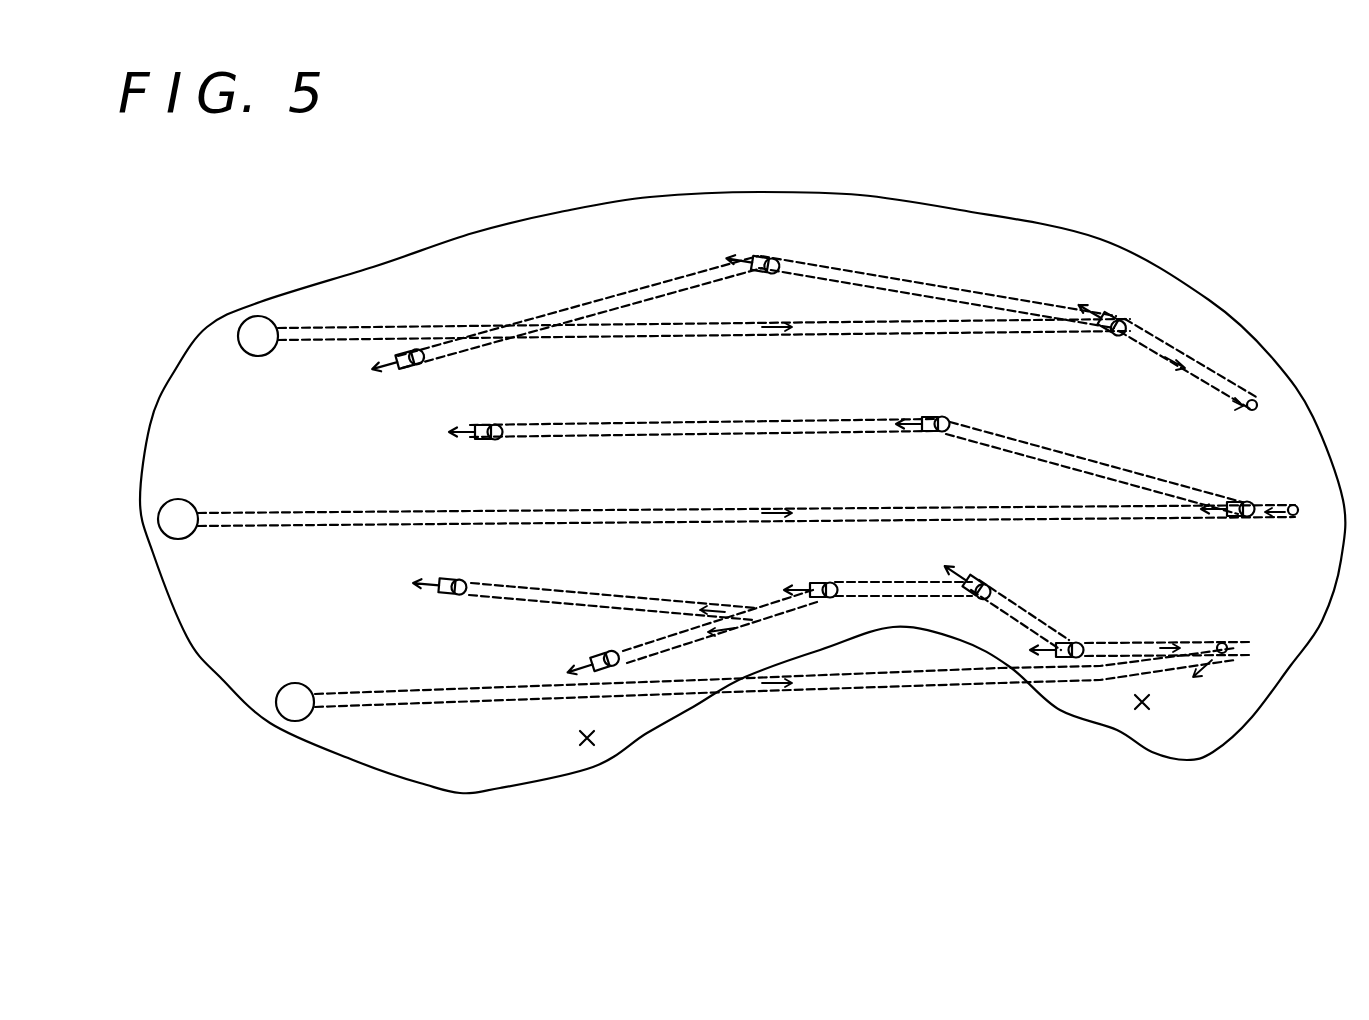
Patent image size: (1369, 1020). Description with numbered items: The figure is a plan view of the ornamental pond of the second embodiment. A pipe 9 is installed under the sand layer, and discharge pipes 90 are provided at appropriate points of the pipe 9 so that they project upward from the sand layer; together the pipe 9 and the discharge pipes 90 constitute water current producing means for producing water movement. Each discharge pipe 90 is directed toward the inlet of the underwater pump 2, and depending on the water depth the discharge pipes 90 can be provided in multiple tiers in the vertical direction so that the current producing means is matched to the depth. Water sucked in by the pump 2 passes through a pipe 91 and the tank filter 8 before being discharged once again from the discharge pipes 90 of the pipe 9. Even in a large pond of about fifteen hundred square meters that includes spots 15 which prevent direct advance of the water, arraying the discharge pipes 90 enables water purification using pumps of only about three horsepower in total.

The underwater pump 2 is at (205, 498).
The tank filter 8 is at (258, 336).
The pipe 9 is at (558, 432).
The pipe 91 is at (590, 332).
The discharge pipe 90 is at (648, 645).
The spots that prevent direct advance of the water 15 is at (582, 742).